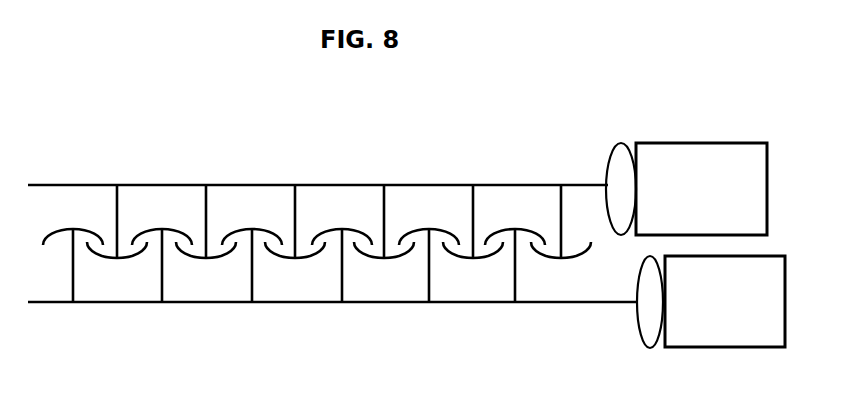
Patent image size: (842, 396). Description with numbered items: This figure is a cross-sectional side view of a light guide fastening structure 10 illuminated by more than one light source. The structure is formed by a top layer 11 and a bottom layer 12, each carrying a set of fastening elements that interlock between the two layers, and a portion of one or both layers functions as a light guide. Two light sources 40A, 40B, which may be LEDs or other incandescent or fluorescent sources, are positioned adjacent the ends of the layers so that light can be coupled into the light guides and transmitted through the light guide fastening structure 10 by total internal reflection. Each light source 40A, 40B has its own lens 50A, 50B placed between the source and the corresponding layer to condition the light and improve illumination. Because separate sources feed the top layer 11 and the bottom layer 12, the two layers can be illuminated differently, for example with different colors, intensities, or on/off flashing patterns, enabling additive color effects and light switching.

The light guide fastening structure 10 is at (343, 170).
The top layer 11 is at (33, 185).
The bottom layer 12 is at (53, 304).
The light source 40A is at (701, 189).
The light source 40B is at (725, 301).
The lens 50A is at (613, 157).
The lens 50B is at (637, 317).